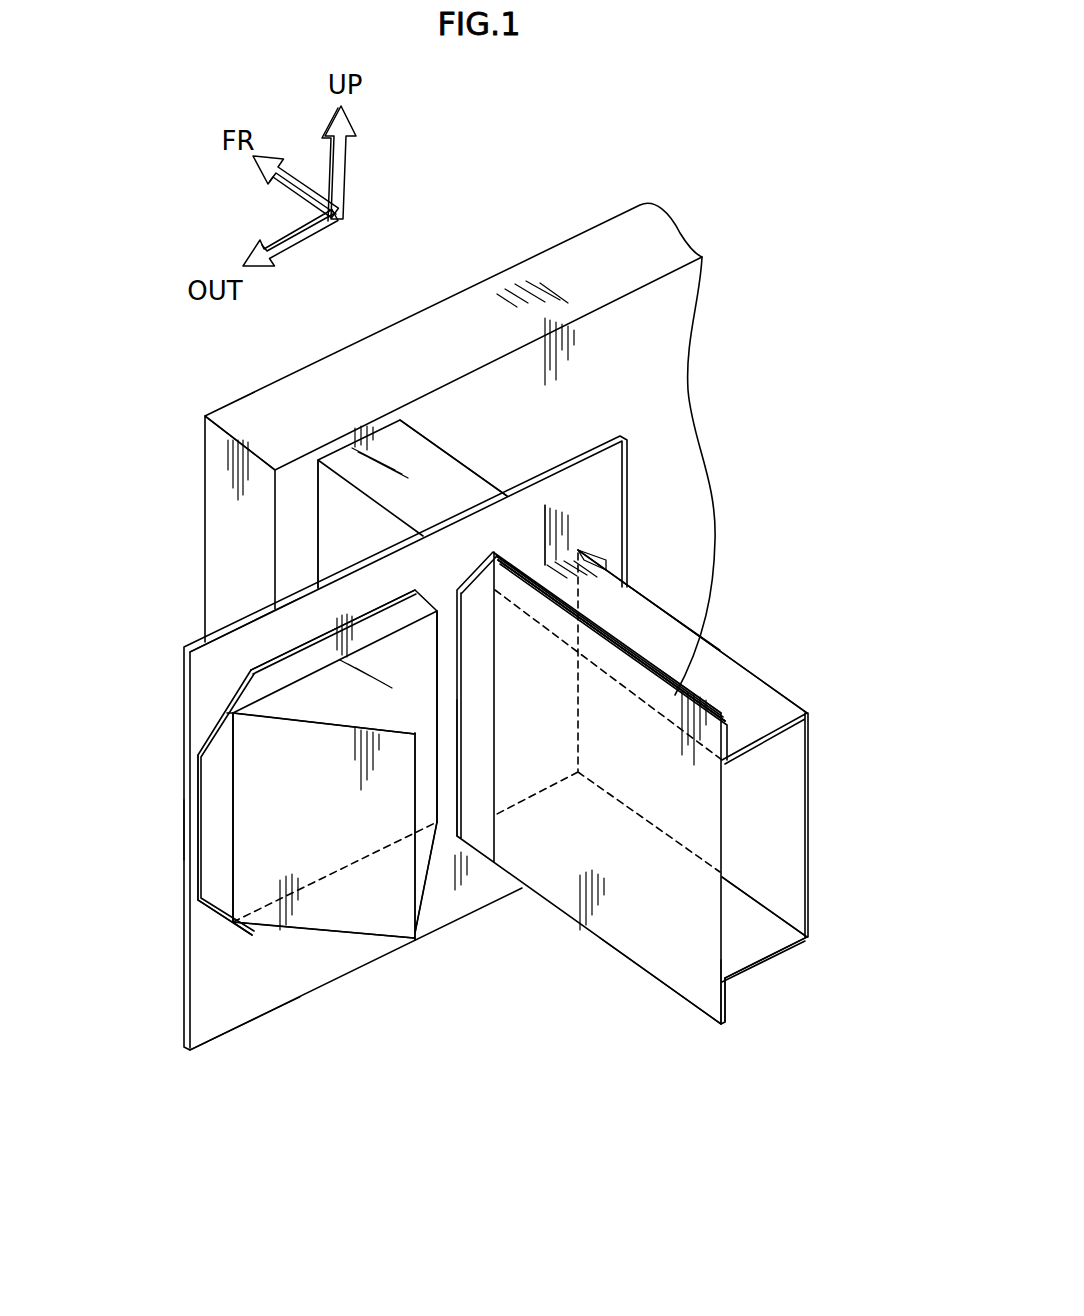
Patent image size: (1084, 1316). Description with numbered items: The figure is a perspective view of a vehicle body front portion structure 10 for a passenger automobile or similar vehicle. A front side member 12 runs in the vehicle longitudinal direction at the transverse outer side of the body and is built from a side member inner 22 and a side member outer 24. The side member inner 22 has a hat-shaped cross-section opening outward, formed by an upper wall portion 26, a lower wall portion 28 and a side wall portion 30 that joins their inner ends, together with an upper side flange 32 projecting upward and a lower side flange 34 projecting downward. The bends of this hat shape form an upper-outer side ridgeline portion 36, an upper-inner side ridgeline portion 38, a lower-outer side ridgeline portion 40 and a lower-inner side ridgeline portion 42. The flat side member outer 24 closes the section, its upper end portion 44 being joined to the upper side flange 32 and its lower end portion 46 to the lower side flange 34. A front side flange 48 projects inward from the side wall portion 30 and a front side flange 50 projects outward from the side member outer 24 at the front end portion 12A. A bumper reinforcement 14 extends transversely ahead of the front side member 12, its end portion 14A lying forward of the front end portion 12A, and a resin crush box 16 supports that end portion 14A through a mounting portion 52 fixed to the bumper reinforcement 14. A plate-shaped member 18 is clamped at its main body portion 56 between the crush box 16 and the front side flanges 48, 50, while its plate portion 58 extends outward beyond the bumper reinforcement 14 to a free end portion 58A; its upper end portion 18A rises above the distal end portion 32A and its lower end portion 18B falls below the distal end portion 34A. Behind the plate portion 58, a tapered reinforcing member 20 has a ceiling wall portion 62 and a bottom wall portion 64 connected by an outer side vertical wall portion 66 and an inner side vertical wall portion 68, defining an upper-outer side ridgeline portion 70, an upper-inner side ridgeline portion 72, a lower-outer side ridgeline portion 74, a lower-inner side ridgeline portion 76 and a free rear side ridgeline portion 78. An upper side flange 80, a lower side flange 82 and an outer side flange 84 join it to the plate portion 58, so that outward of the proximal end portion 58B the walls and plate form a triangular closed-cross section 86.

The vehicle body front portion structure 10 is at (636, 157).
The front side member 12 is at (673, 871).
The front end portion 12A is at (552, 538).
The bumper reinforcement 14 is at (466, 290).
The end portion 14A is at (262, 390).
The crush box 16 is at (312, 511).
The plate-shaped member 18 is at (634, 466).
The upper end portion 18A is at (250, 624).
The lower end portion 18B is at (242, 1027).
The reinforcing member 20 is at (343, 944).
The side member inner 22 is at (673, 844).
The side member outer 24 is at (686, 1013).
The upper wall portion 26 is at (778, 717).
The lower wall portion 28 is at (763, 958).
The side wall portion 30 is at (807, 832).
The upper side flange 32 is at (727, 727).
The distal end portion 32A is at (700, 705).
The lower side flange 34 is at (725, 993).
The distal end portion 34A is at (722, 1028).
The upper-outer side ridgeline portion 36 is at (578, 652).
The upper-inner side ridgeline portion 38 is at (681, 667).
The lower-outer side ridgeline portion 40 is at (622, 875).
The lower-inner side ridgeline portion 42 is at (760, 902).
The upper end portion 44 is at (710, 676).
The lower end portion 46 is at (660, 967).
The front side flange 48 is at (607, 567).
The front side flange 50 is at (478, 590).
The mounting portion 52 is at (340, 450).
The main body portion 56 is at (468, 505).
The plate portion 58 is at (205, 942).
The end portion 58A is at (183, 828).
The proximal end portion 58B is at (448, 703).
The ceiling wall portion 62 is at (298, 702).
The bottom wall portion 64 is at (333, 905).
The outer side vertical wall portion 66 is at (250, 853).
The inner side vertical wall portion 68 is at (422, 870).
The upper-outer side ridgeline portion 70 is at (280, 720).
The upper-inner side ridgeline portion 72 is at (430, 663).
The lower-outer side ridgeline portion 74 is at (375, 943).
The lower-inner side ridgeline portion 76 is at (437, 867).
The rear side ridgeline portion 78 is at (415, 845).
The upper side flange 80 is at (306, 642).
The lower side flange 82 is at (247, 937).
The outer side flange 84 is at (195, 870).
The closed-cross section 86 is at (327, 690).